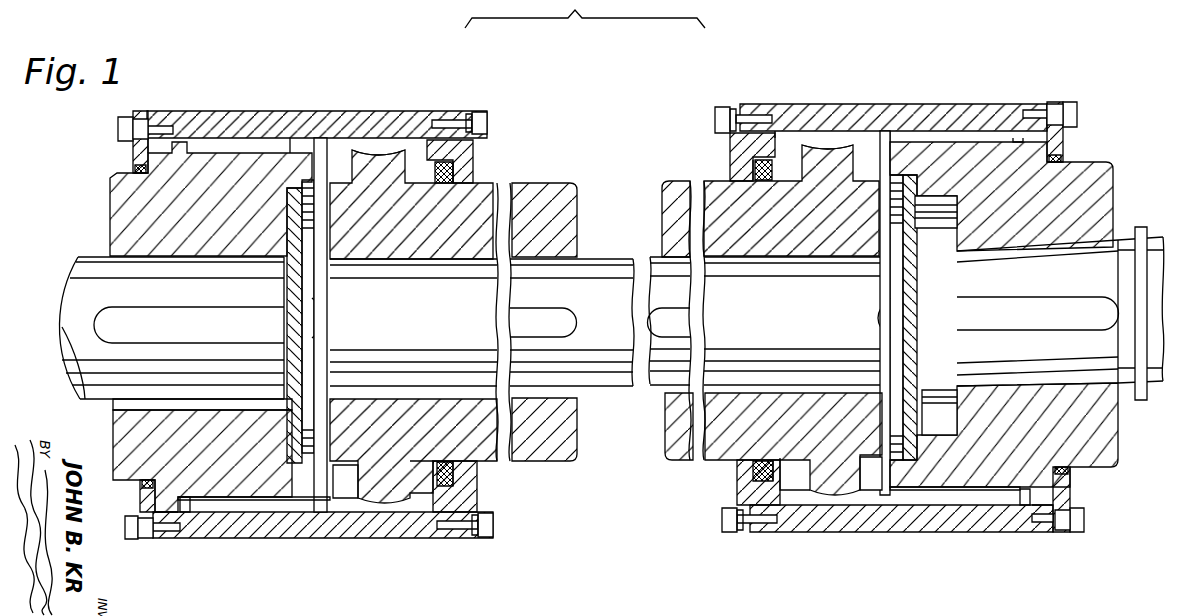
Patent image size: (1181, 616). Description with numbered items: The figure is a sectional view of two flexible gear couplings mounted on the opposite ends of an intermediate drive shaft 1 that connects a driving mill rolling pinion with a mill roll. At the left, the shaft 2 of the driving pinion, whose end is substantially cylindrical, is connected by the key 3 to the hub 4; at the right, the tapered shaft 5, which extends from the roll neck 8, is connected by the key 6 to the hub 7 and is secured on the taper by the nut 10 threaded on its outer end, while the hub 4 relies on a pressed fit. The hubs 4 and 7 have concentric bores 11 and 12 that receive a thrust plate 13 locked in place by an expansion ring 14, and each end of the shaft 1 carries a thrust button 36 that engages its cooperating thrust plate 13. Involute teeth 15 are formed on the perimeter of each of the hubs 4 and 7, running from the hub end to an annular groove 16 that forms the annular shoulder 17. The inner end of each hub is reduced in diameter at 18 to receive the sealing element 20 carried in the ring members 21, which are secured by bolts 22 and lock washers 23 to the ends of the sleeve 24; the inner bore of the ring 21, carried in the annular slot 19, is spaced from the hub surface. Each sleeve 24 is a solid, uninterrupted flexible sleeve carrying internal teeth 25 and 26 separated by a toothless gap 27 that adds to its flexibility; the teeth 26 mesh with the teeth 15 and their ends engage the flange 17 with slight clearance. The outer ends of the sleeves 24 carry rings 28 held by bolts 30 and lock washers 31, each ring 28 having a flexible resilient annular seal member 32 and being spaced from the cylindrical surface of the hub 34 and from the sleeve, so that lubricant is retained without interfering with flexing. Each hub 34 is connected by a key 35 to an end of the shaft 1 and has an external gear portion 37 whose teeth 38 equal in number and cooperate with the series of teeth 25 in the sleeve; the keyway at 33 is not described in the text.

The intermediate drive shaft 1 is at (660, 277).
The shaft of the driving pinion 2 is at (80, 268).
The key 3 is at (135, 314).
The hub 4 is at (128, 425).
The shaft 5 is at (1056, 280).
The key 6 is at (1068, 302).
The hub 7 is at (1100, 428).
The roll neck 8 is at (1140, 227).
The nut 10 is at (963, 332).
The concentric bore 11 is at (292, 462).
The concentric bore 12 is at (913, 437).
The thrust plate 13 is at (294, 290).
The expansion ring 14 is at (306, 298).
The involute teeth 15 is at (220, 147).
The annular groove 16 is at (162, 512).
The annular shoulder 17 is at (172, 520).
The reduced diameter portion 18 is at (625, 317).
The annular slot 19 is at (128, 176).
The sealing element 20 is at (136, 168).
The ring member 21 is at (140, 118).
The bolt 22 is at (120, 132).
The lock washer 23 is at (122, 118).
The sleeve 24 is at (290, 530).
The internal teeth 25 is at (345, 512).
The internal teeth 26 is at (187, 512).
The gap 27 is at (320, 512).
The ring 28 is at (460, 150).
The bolt 30 is at (488, 120).
The lock washer 31 is at (477, 112).
The flexible resilient annular seal member 32 is at (450, 174).
The keyway 33 is at (460, 475).
The hub 34 is at (520, 192).
The key 35 is at (550, 325).
The thrust button 36 is at (318, 320).
The external gear portion 37 is at (385, 165).
The teeth 38 is at (362, 148).